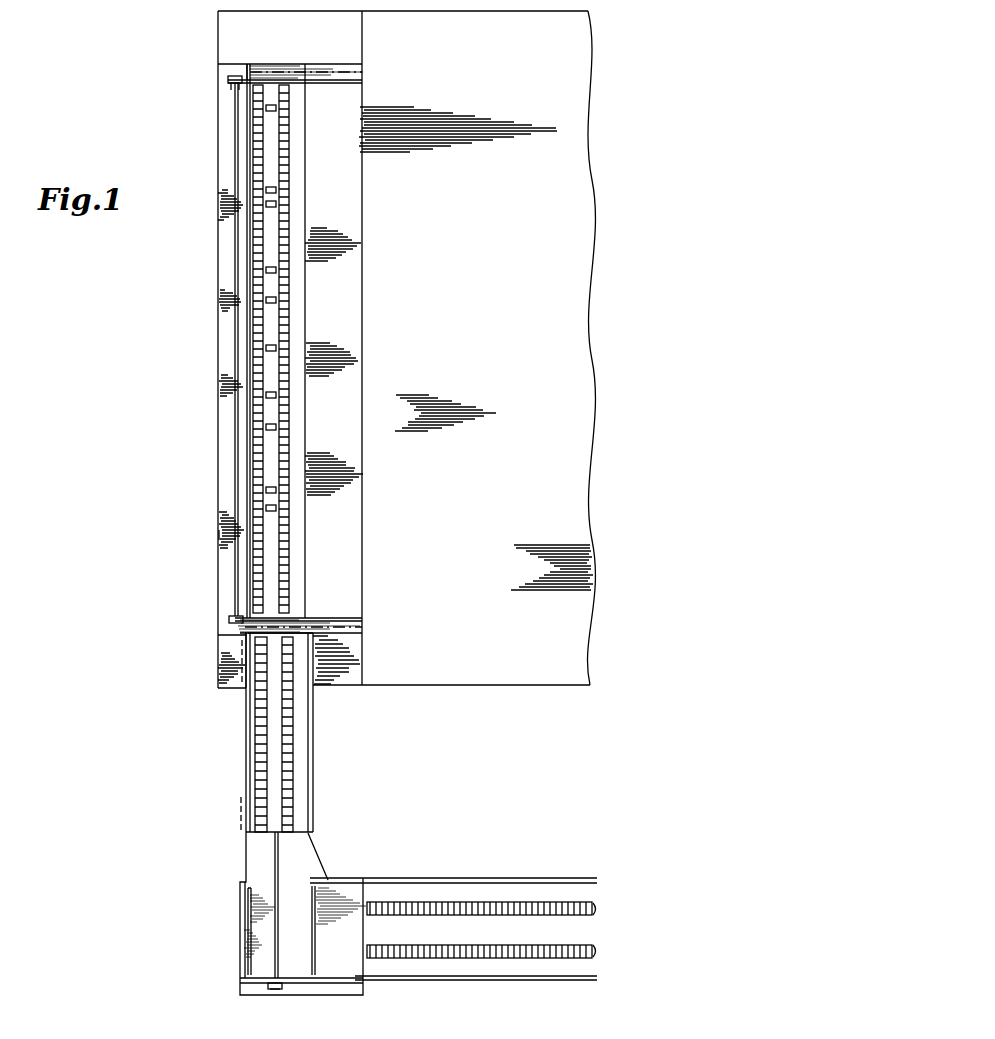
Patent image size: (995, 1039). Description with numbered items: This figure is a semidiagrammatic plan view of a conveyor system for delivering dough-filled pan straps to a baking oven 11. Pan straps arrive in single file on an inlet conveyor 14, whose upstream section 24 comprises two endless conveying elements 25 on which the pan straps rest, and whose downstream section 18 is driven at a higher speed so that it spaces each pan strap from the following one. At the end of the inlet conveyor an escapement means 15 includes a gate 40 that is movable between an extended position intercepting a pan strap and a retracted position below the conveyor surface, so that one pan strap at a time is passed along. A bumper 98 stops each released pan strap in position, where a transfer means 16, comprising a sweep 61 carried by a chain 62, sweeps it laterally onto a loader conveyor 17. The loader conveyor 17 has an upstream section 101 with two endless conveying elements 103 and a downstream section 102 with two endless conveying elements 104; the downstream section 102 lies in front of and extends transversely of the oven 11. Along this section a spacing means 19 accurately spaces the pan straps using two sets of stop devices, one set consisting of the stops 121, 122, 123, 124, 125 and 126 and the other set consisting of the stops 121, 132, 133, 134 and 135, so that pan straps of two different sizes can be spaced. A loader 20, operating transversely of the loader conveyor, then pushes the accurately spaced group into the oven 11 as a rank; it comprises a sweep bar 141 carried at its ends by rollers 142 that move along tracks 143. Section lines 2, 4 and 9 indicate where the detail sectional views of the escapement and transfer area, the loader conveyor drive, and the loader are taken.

The oven 11 is at (427, 316).
The inlet conveyor 14 is at (429, 892).
The escapement means 15 is at (316, 988).
The transfer means 16 is at (280, 999).
The loader conveyor 17 is at (252, 746).
The downstream section 18 is at (331, 892).
The spacing means 19 is at (261, 404).
The loader 20 is at (231, 536).
The upstream section 24 is at (512, 892).
The endless conveying elements 25 is at (596, 914).
The gate 40 is at (316, 940).
The sweep 61 is at (276, 986).
The chain 62 is at (278, 873).
The bumper 98 is at (248, 926).
The upstream section 101 is at (258, 778).
The downstream section 102 is at (246, 367).
The endless conveying elements 103 is at (262, 710).
The endless conveying elements 104 is at (287, 552).
The stop device 121 is at (276, 108).
The movable stop 122 is at (276, 190).
The movable stop 123 is at (276, 270).
The movable stop 124 is at (276, 348).
The movable stop 125 is at (276, 427).
The movable stop 126 is at (276, 508).
The movable stop 132 is at (276, 204).
The movable stop 133 is at (276, 300).
The movable stop 134 is at (276, 395).
The movable stop 135 is at (276, 490).
The sweep bar 141 is at (236, 303).
The rollers 142 is at (229, 82).
The tracks 143 is at (346, 77).
The section line 2- 2 is at (262, 1006).
The section line 4- 4 is at (234, 640).
The section line 9- 9 is at (218, 630).